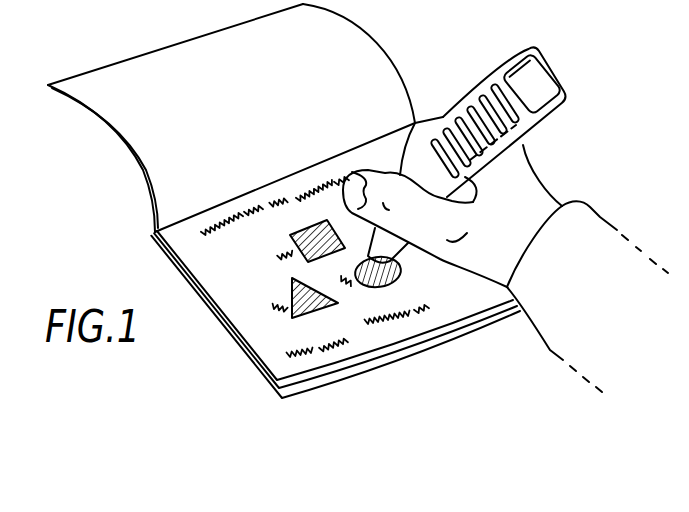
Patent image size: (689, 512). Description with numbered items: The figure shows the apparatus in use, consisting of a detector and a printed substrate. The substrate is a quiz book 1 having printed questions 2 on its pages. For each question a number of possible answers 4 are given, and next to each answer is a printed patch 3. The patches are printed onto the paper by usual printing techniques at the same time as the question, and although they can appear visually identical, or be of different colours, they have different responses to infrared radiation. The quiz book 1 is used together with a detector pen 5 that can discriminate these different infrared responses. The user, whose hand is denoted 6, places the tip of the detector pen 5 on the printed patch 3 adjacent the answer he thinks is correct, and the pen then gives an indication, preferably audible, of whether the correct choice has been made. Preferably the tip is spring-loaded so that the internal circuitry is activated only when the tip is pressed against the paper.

The quiz book 1 is at (168, 62).
The printed questions 2 is at (212, 236).
The printed patch 3 is at (303, 226).
The possible answers 4 is at (280, 258).
The detector pen 5 is at (465, 84).
The hand 6 is at (490, 280).